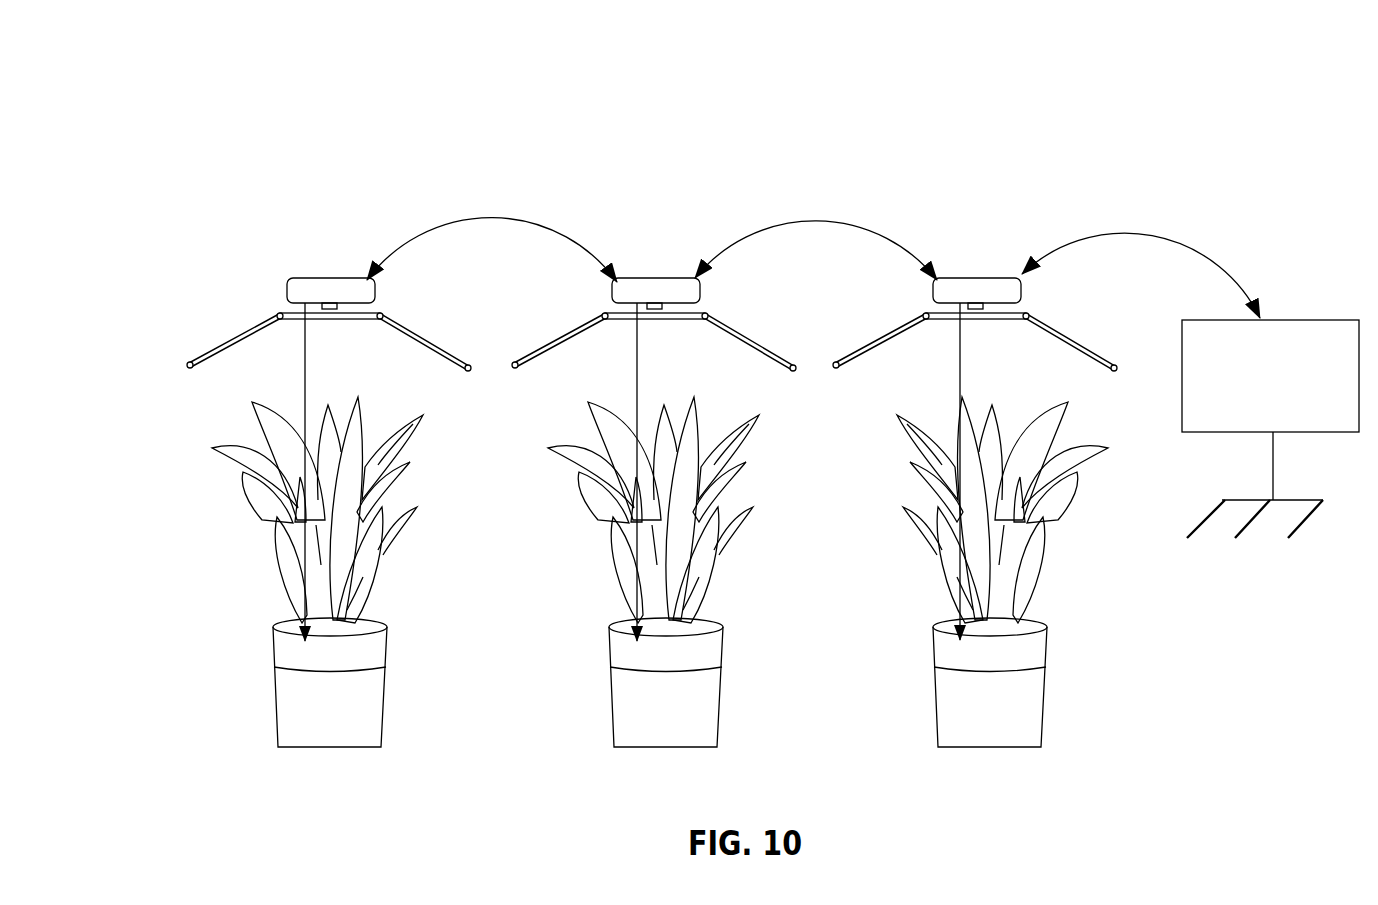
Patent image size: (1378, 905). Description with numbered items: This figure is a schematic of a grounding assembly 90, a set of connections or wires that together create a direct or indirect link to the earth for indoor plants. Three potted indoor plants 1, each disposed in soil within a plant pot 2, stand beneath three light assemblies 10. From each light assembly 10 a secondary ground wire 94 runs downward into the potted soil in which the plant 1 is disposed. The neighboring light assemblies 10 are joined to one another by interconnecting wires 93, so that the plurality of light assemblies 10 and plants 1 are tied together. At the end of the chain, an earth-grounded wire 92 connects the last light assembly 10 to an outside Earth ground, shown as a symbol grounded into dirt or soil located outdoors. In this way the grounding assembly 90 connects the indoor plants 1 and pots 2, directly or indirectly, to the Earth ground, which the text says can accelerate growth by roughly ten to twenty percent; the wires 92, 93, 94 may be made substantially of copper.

The indoor plant 1 is at (226, 488).
The plant pot 2 is at (273, 686).
The light assembly 10 is at (318, 260).
The grounding assembly 90 is at (548, 197).
The earth-grounded wire 92 is at (1135, 232).
The interconnecting wire 93 is at (490, 217).
The secondary ground wire 94 is at (303, 570).